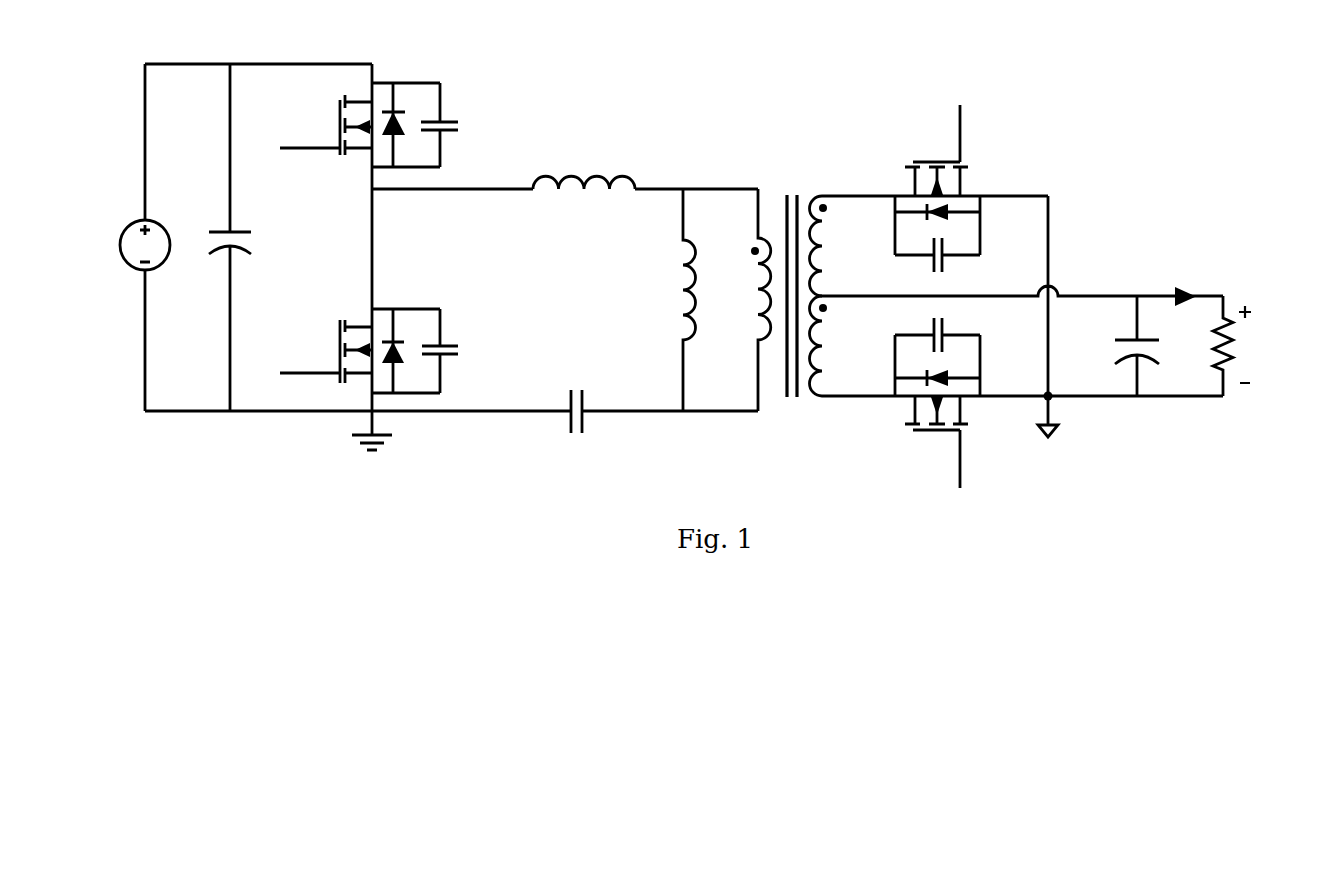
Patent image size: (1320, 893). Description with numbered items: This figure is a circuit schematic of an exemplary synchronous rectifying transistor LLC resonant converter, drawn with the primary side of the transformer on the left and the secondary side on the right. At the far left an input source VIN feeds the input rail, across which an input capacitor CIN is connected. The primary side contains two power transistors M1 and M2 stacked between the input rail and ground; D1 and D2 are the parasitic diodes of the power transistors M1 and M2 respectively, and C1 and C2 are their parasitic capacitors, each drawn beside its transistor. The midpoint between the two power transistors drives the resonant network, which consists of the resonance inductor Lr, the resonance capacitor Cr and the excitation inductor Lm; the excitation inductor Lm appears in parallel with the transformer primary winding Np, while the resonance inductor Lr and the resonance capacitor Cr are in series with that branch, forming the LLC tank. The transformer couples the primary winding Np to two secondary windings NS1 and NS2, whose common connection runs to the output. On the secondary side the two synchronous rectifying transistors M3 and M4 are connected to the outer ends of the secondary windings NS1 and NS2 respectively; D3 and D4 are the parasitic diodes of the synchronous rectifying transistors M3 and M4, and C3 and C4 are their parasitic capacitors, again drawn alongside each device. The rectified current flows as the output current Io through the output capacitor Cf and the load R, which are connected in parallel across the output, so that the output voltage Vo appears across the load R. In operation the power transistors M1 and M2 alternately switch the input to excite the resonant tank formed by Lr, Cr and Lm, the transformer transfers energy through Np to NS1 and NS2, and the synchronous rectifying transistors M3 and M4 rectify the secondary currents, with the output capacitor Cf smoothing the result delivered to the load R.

The input voltage source VIN is at (158, 266).
The input capacitor CIN is at (249, 237).
The power transistor M1 is at (326, 125).
The parasitic diode D1 is at (406, 125).
The parasitic capacitor C1 is at (450, 125).
The power transistor M2 is at (326, 351).
The parasitic diode D2 is at (406, 354).
The parasitic capacitor C2 is at (451, 354).
The resonance inductor Lr is at (584, 164).
The resonance capacitor Cr is at (557, 396).
The excitation inductor Lm is at (666, 300).
The transformer primary winding Np is at (747, 300).
The first secondary winding NS1 is at (842, 246).
The second secondary winding NS2 is at (842, 346).
The synchronous rectifying transistor M3 is at (936, 150).
The parasitic diode D3 is at (957, 225).
The parasitic capacitor C3 is at (957, 258).
The synchronous rectifying transistor M4 is at (936, 442).
The parasitic diode D4 is at (957, 369).
The parasitic capacitor C4 is at (957, 339).
The output capacitor Cf is at (1127, 346).
The output current Io is at (1185, 276).
The load R is at (1209, 346).
The output voltage Vo is at (1261, 344).